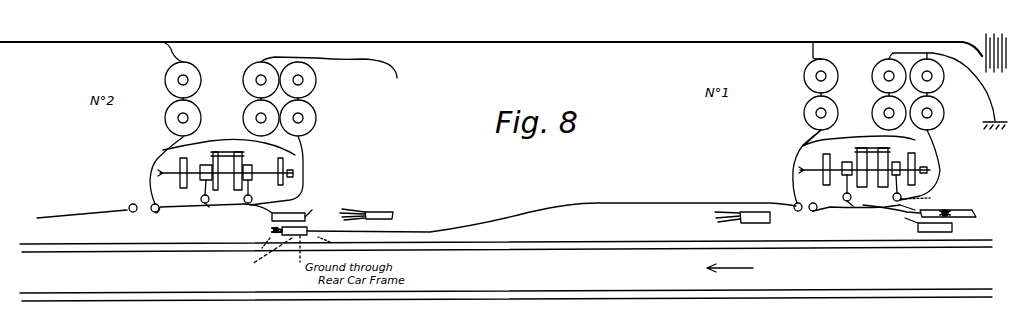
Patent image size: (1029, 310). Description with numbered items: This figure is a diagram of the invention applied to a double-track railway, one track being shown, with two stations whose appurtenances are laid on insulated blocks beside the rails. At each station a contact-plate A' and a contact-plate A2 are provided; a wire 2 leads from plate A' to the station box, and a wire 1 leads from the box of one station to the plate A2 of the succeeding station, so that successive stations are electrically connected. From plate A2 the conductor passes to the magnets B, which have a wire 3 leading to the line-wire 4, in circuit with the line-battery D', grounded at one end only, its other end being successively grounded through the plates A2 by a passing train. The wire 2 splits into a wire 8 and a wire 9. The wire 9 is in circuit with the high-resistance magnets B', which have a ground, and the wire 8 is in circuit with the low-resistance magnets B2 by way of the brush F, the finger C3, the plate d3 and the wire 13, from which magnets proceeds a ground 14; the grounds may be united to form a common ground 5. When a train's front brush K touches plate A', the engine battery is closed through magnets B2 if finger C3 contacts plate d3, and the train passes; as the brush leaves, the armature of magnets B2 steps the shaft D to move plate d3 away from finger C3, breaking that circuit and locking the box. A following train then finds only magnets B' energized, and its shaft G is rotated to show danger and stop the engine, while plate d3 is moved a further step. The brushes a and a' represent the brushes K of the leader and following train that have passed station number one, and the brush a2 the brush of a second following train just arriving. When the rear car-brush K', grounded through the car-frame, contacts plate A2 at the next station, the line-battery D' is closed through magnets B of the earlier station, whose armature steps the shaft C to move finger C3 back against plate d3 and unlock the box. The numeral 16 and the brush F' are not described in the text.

The wire 1 is at (429, 181).
The wire or connector 2 is at (258, 198).
The wire 3 is at (491, 52).
The line-wire 4 is at (491, 51).
The common ground 5 is at (628, 87).
The wire 8 is at (538, 200).
The wire 9 is at (535, 174).
The wire 13 is at (602, 167).
The ground 14 is at (900, 50).
The wheel 16 is at (927, 66).
The magnets B is at (501, 97).
The high-resistance magnets B' is at (565, 97).
The low-resistance magnets B2 is at (620, 97).
The shaft C is at (544, 179).
The finger C3 is at (538, 159).
The plate d3 is at (550, 168).
The shaft D is at (604, 167).
The line-battery D' is at (1005, 58).
The brush F is at (519, 182).
The pendulum F' is at (594, 182).
The shaft G is at (995, 137).
The contact-plate A' is at (598, 215).
The contact-plate A2 is at (612, 230).
The brush of leader a is at (366, 205).
The brush of following train a' is at (776, 224).
The brush of second following train a2 is at (919, 202).
The front or engine brush K is at (696, 215).
The rear car-brush K' is at (288, 257).